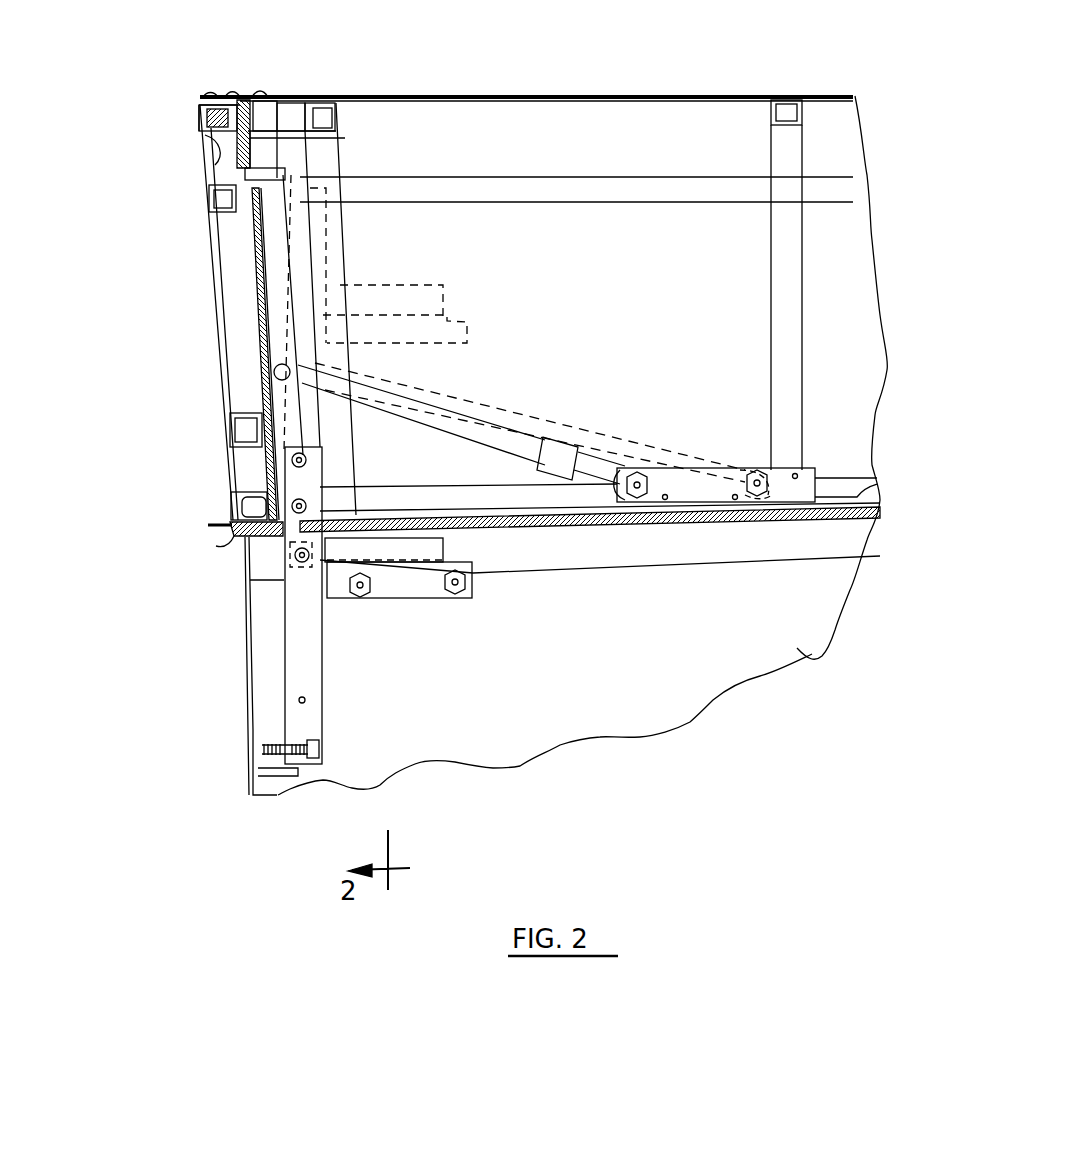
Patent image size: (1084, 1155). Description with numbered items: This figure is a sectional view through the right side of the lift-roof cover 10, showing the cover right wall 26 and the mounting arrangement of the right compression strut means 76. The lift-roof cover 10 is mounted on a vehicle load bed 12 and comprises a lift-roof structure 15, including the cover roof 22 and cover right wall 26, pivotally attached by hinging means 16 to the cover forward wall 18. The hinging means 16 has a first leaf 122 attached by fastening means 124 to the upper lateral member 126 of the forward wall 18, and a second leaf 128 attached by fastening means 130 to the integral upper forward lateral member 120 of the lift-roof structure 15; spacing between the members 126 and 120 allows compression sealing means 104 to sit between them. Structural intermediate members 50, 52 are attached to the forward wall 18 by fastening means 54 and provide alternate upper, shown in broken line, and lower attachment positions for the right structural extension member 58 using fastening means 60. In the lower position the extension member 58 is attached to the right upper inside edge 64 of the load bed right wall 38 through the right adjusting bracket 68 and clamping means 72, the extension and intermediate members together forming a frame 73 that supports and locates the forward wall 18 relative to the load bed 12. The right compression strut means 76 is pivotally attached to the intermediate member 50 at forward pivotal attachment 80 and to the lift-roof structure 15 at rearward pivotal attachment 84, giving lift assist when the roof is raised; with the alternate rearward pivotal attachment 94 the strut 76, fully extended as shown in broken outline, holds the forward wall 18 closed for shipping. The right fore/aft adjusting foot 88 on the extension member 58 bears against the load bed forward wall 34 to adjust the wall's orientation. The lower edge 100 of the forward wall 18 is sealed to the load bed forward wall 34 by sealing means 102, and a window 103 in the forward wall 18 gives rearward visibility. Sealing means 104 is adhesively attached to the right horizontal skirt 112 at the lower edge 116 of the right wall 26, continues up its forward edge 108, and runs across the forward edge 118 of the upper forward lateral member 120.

The lift-roof cover 10 is at (735, 97).
The load bed 12 is at (812, 654).
The lift-roof structure 15 is at (805, 97).
The hinging means 16 is at (240, 97).
The cover forward wall 18 is at (225, 428).
The cover roof 22 is at (585, 97).
The cover right wall 26 is at (835, 245).
The load bed forward wall 34 is at (250, 660).
The load bed right wall 38 is at (687, 695).
The right structural intermediate member 50 is at (265, 258).
The structural intermediate member 52 is at (268, 225).
The fastening means 54 is at (265, 238).
The right structural extension member 58 is at (330, 267).
The fastening means 60 is at (305, 460).
The right upper inside edge 64 is at (700, 545).
The right adjusting bracket 68 is at (430, 592).
The fastening or clamping means 72 is at (455, 580).
The frame 73 is at (310, 620).
The right compression strut means 76 is at (500, 400).
The right forward pivotal attachment 80 is at (275, 375).
The right compression strut means rearward pivotal attachment 84 is at (640, 475).
The right fore/aft adjusting foot 88 is at (258, 750).
The compression strut means rearward pivotal attachment 94 is at (760, 475).
The lower edge 100 is at (240, 505).
The sealing means 102 is at (228, 537).
The window 103 is at (227, 318).
The sealing means 104 is at (255, 147).
The forward edge 108 is at (248, 140).
The right horizontal skirt 112 is at (845, 505).
The lower edge 116 is at (815, 478).
The forward edge 118 is at (213, 185).
The upper forward lateral member 120 is at (240, 130).
The first leaf 122 is at (205, 100).
The fastening means 124 is at (212, 128).
The upper lateral member 126 is at (212, 165).
The second leaf 128 is at (272, 101).
The fastening means 130 is at (265, 97).